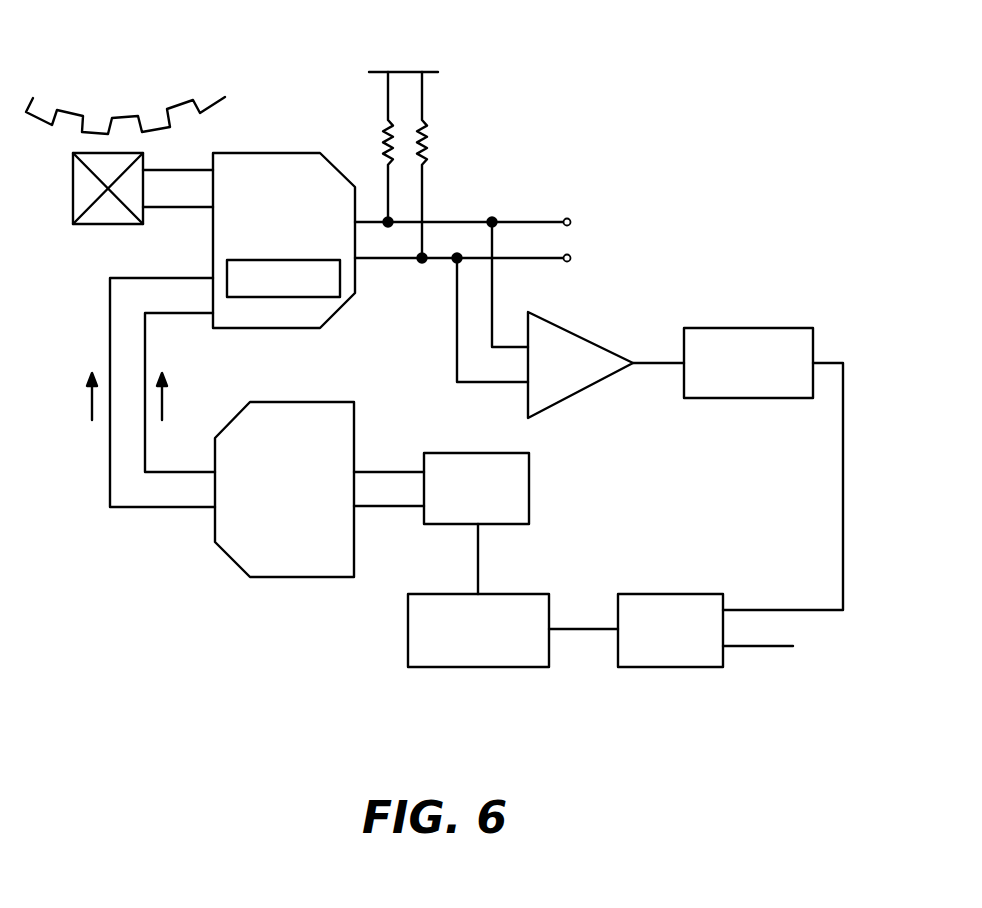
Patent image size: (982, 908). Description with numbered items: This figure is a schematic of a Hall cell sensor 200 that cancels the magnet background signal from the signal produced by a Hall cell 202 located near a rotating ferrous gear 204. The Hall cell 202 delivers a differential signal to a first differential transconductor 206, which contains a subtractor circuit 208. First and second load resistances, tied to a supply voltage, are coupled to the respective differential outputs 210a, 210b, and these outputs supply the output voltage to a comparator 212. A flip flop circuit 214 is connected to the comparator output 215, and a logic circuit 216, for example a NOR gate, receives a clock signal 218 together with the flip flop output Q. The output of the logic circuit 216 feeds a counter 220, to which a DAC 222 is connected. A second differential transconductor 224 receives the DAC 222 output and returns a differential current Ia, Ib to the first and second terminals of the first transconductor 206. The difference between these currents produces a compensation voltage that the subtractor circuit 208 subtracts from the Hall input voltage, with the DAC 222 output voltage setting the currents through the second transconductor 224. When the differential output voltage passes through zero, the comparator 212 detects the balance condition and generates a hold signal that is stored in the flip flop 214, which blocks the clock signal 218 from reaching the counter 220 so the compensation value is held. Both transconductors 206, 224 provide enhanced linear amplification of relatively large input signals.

The Hall cell sensor 200 is at (548, 46).
The Hall cell 202 is at (58, 206).
The rotating ferrous gear 204 is at (134, 98).
The first differential transconductor 206 is at (257, 153).
The subtractor circuit 208 is at (276, 259).
The first differential output 210a is at (528, 221).
The second differential output 210b is at (528, 259).
The comparator 212 is at (578, 390).
The flip flop circuit 214 is at (737, 398).
The comparator output 215 is at (649, 363).
The logic circuit 216 is at (670, 667).
The clock signal 218 is at (787, 648).
The counter 220 is at (477, 667).
The DAC 222 is at (529, 478).
The second differential transconductor 224 is at (283, 577).